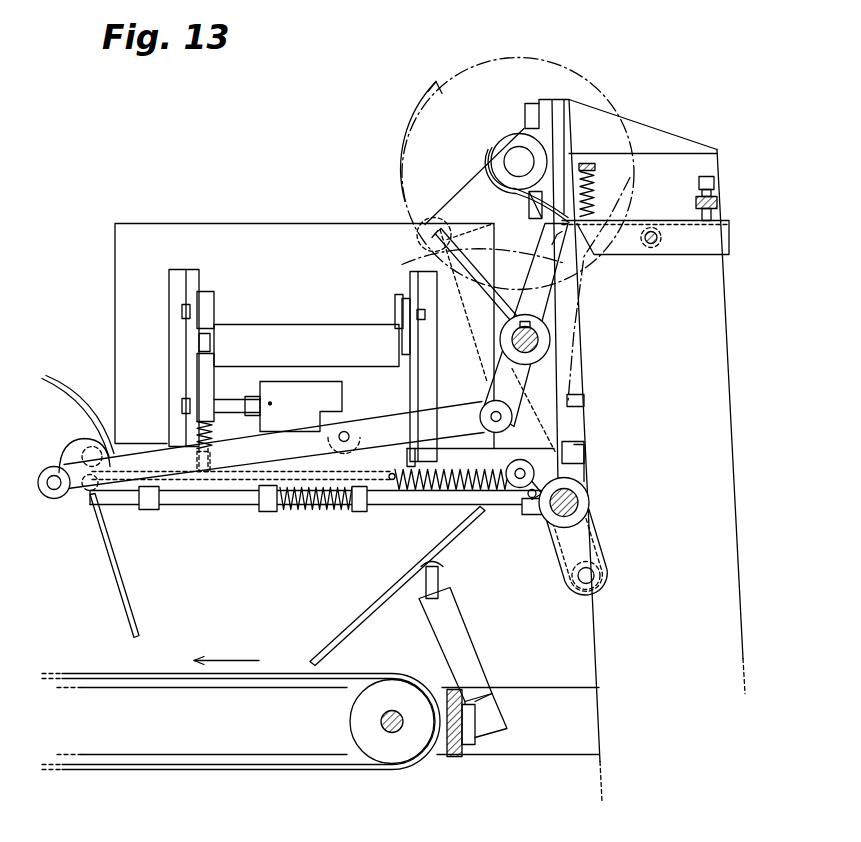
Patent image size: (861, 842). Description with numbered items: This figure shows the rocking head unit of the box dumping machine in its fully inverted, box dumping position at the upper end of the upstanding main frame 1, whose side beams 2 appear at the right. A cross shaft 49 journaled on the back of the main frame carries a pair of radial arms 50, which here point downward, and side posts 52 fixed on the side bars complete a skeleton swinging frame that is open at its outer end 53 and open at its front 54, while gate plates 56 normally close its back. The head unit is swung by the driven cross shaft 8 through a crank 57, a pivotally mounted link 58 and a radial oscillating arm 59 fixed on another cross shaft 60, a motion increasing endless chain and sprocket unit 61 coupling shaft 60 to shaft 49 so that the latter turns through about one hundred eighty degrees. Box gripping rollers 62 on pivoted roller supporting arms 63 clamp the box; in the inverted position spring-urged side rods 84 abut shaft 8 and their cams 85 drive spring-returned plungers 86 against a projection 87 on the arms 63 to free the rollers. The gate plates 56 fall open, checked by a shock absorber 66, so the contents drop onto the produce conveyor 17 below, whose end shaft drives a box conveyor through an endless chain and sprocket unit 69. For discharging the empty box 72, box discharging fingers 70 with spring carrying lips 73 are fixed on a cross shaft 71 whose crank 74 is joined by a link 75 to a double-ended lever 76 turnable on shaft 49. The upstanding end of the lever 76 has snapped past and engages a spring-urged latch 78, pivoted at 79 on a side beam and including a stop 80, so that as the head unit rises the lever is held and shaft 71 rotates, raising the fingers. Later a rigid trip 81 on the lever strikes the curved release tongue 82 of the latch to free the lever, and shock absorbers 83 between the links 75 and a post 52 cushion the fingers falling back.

The main frame 1 is at (630, 110).
The side beams 2 is at (716, 341).
The driven cross shaft 8 is at (614, 535).
The produce conveyor 17 is at (156, 667).
The cross shaft 49 is at (548, 338).
The radial arms 50 is at (545, 398).
The side posts 52 is at (180, 283).
The open outer end 53 is at (94, 330).
The open front 54 is at (336, 218).
The gate plates 56 is at (123, 578).
The crank 57 is at (552, 547).
The link 58 is at (553, 442).
The radial oscillating arm 59 is at (459, 190).
The cross shaft 60 is at (518, 157).
The motion increasing endless chain and sprocket unit 61 is at (594, 306).
The box gripping rollers 62 is at (315, 343).
The roller supporting arms 63 is at (397, 340).
The shock absorber 66 is at (454, 624).
The endless chain and sprocket unit 69 is at (394, 731).
The box discharging fingers 70 is at (293, 508).
The cross shaft 71 is at (96, 448).
The empty box 72 is at (286, 218).
The spring carrying lips 73 is at (66, 389).
The crank 74 is at (66, 456).
The link 75 is at (375, 428).
The double-ended lever 76 is at (545, 278).
The spring-urged latch 78 is at (716, 240).
The pivot 79 is at (651, 246).
The stop 80 is at (716, 203).
The rigid trip 81 is at (432, 245).
The curved release tongue 82 is at (523, 208).
The shock absorbers 83 is at (318, 392).
The spring-urged side rods 84 is at (400, 505).
The cams 85 is at (209, 490).
The spring-returned plungers 86 is at (210, 341).
The projection 87 is at (205, 323).